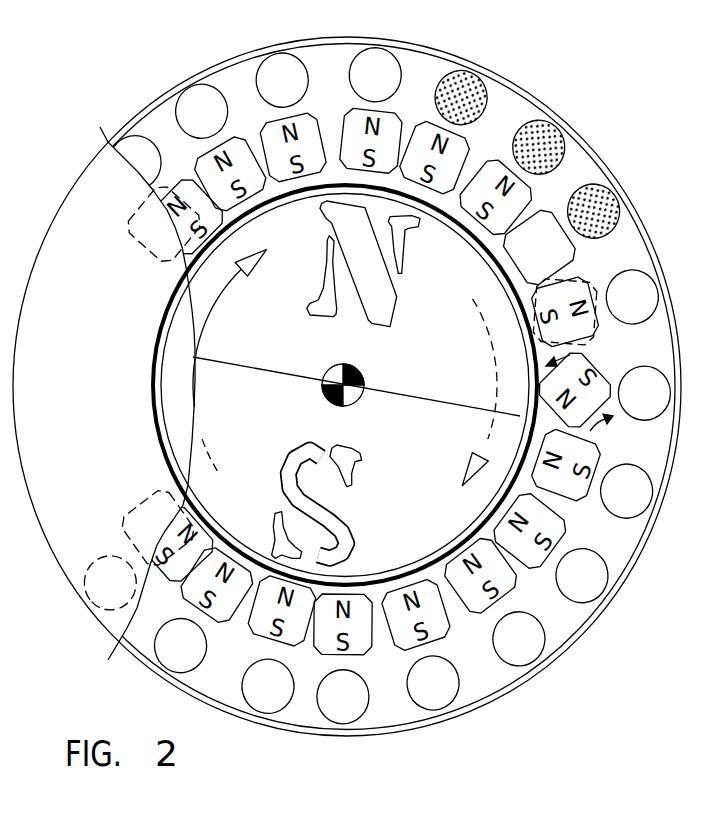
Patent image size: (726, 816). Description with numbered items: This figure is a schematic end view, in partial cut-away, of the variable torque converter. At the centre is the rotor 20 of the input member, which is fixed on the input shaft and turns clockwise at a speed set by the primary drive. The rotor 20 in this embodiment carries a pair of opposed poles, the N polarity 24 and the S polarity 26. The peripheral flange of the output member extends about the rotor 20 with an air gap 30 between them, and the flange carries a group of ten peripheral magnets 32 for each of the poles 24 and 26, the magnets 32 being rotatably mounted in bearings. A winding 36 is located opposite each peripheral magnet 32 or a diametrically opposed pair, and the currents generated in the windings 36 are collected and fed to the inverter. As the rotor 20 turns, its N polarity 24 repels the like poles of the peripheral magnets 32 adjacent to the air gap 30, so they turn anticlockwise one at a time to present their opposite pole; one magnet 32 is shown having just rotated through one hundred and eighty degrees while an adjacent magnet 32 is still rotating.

The rotor 20 is at (516, 486).
The N pole 24 is at (441, 232).
The S pole 26 is at (468, 508).
The air gap 30 is at (290, 188).
The peripheral magnet 32 is at (541, 213).
The winding 36 is at (623, 220).